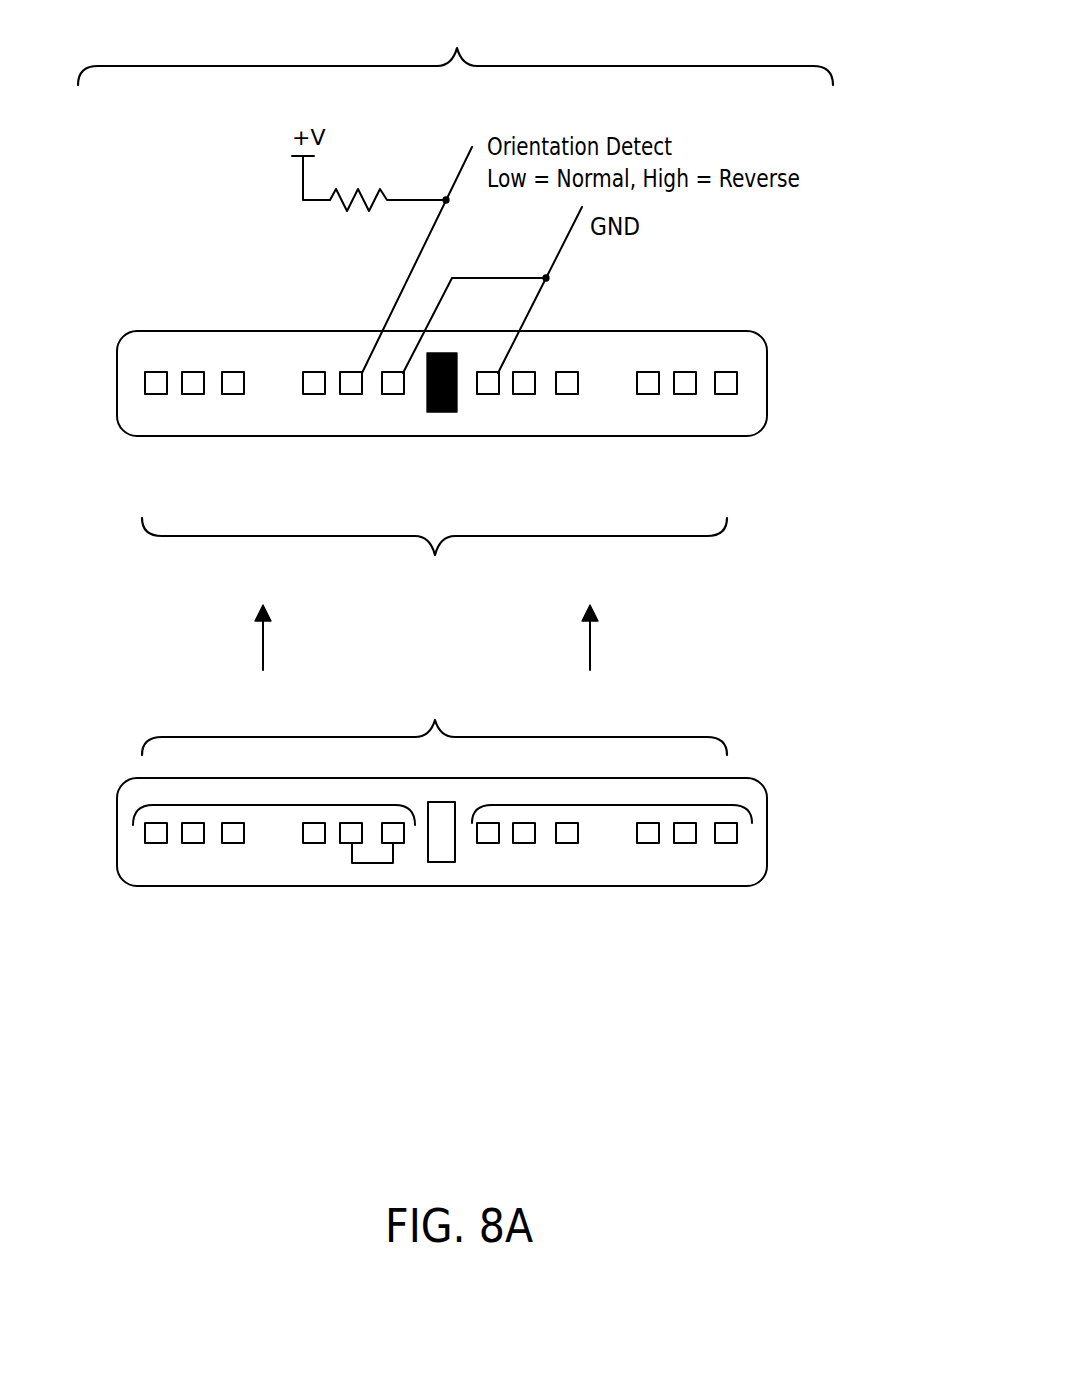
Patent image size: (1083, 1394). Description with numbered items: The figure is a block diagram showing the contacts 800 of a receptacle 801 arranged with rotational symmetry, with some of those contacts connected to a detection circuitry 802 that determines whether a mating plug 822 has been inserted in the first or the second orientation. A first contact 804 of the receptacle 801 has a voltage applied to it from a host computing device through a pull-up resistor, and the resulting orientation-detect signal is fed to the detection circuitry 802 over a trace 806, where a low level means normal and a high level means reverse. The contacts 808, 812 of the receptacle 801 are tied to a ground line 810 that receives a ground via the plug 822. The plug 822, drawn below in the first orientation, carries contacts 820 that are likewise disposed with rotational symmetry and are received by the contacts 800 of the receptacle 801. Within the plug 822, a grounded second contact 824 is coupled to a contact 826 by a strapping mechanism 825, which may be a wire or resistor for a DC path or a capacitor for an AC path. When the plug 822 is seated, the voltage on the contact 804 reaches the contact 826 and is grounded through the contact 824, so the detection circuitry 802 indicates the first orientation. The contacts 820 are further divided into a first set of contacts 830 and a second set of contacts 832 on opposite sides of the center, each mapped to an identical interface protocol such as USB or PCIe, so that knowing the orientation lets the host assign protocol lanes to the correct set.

The contacts of the receptacle 800 is at (434, 553).
The receptacle 801 is at (202, 343).
The detection circuitry 802 is at (455, 48).
The first contact 804 is at (351, 394).
The orientation detect trace 806 is at (402, 290).
The contact 808 is at (393, 394).
The ground line 810 is at (555, 260).
The contact 812 is at (488, 395).
The contacts of the plug 820 is at (434, 720).
The plug 822 is at (767, 825).
The second contact 824 is at (402, 842).
The strapping mechanism 825 is at (375, 872).
The contact 826 is at (351, 838).
The first set of contacts 830 is at (272, 806).
The second set of contacts 832 is at (610, 805).